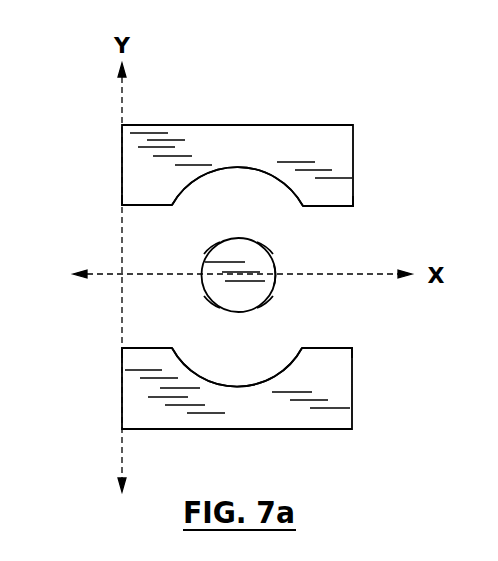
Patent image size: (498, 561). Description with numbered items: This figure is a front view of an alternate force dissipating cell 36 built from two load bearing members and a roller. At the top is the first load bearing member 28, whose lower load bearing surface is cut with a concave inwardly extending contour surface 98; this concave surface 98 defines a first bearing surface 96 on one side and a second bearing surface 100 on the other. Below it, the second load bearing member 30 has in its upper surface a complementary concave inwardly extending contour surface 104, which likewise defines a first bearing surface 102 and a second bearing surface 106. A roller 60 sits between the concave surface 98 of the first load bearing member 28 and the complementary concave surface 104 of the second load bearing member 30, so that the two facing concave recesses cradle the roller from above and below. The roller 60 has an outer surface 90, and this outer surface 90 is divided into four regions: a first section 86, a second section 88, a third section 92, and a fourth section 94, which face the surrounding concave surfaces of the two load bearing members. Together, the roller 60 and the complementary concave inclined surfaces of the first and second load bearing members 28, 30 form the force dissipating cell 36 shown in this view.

The force dissipating cell 36 is at (288, 86).
The first load bearing member 28 is at (353, 125).
The second load bearing member 30 is at (353, 431).
The roller 60 is at (200, 273).
The first section 86 is at (210, 248).
The second section 88 is at (273, 249).
The outer surface 90 is at (277, 273).
The third section 92 is at (270, 300).
The forth section 94 is at (206, 300).
The first bearing surface 96 is at (124, 210).
The concave inwardly extending contour surface 98 is at (232, 168).
The second bearing surface 100 is at (338, 208).
The first bearing surface 102 is at (130, 347).
The complimentary concave inwardly extending contour surface 104 is at (240, 386).
The second bearing surface 106 is at (344, 348).